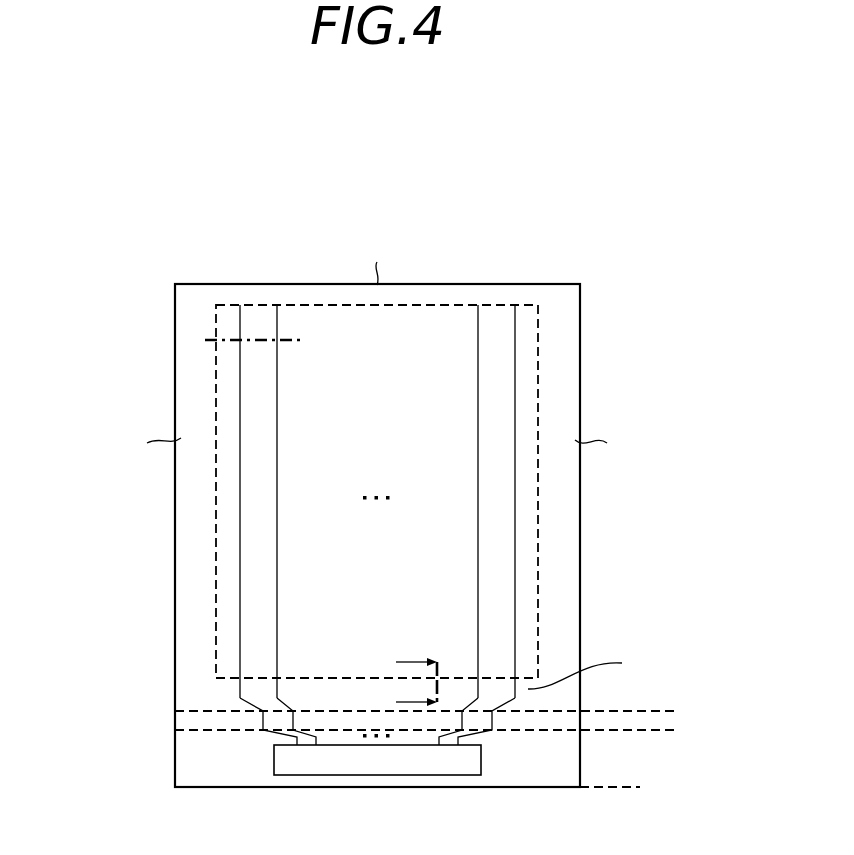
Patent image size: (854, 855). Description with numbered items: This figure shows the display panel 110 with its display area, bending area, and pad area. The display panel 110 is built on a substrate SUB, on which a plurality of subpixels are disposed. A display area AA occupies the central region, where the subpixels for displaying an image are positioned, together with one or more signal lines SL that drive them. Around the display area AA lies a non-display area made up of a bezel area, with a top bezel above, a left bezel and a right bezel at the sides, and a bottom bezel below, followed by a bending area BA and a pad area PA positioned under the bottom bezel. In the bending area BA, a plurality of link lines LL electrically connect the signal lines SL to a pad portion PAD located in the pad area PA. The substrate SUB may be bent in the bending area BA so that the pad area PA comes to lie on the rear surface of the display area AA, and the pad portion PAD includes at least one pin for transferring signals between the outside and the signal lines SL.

The display panel 110 is at (154, 198).
The substrate SUB is at (580, 300).
The display area AA is at (538, 337).
The signal line SL is at (515, 373).
The link line LL is at (248, 704).
The pad portion PAD is at (375, 778).
The bending area BA is at (673, 686).
The pad area PA is at (627, 738).